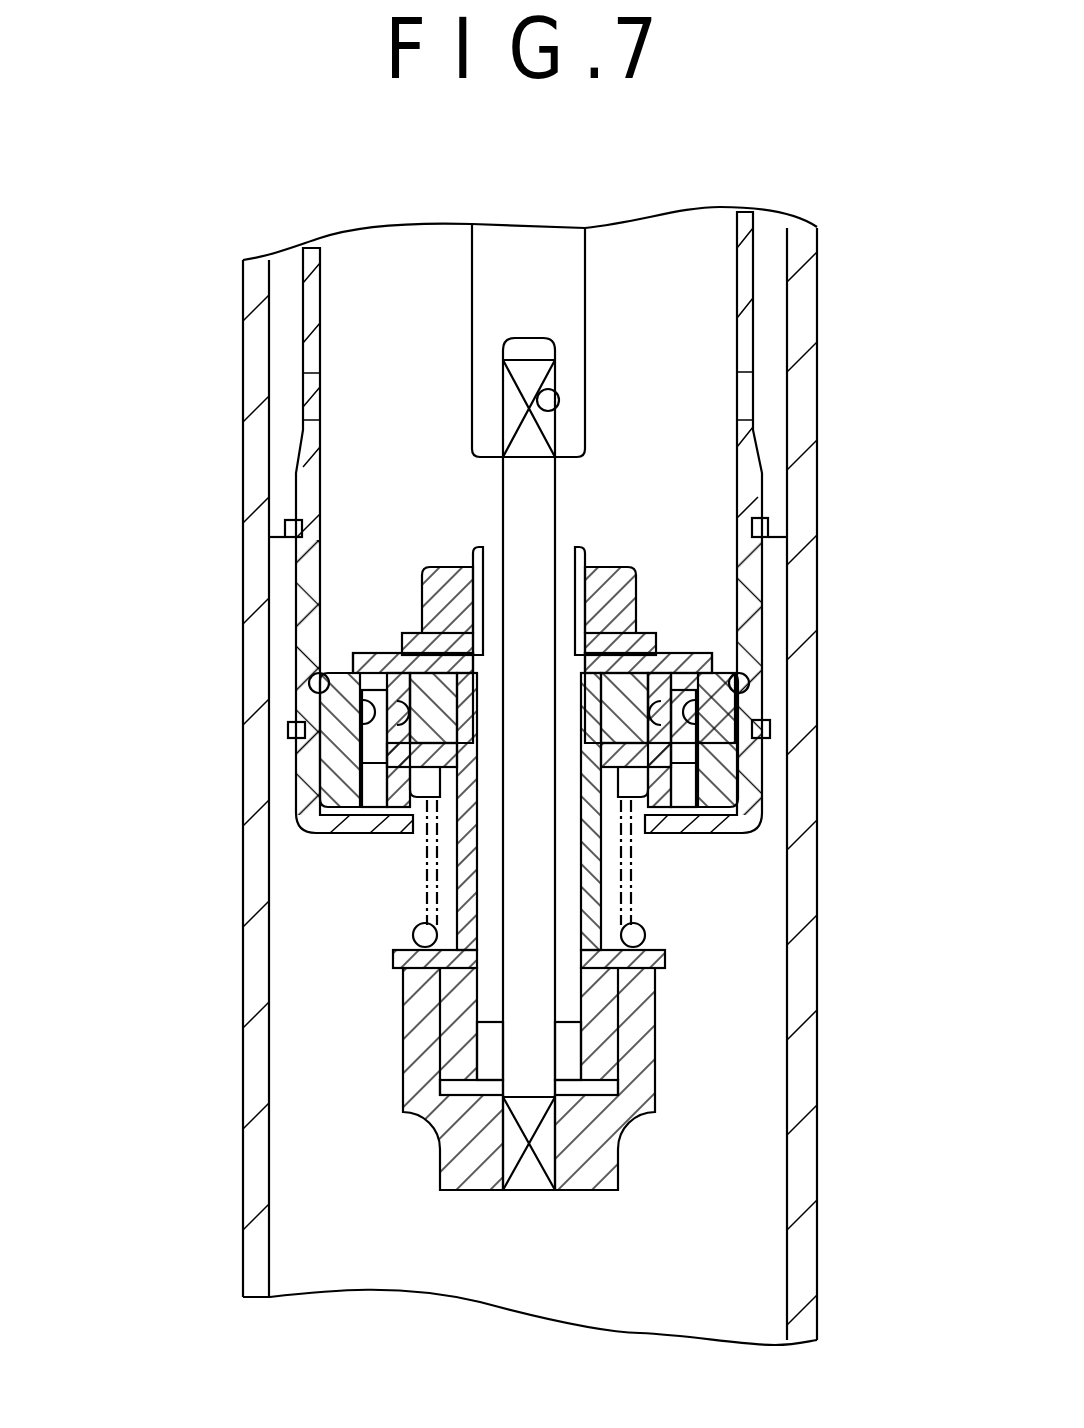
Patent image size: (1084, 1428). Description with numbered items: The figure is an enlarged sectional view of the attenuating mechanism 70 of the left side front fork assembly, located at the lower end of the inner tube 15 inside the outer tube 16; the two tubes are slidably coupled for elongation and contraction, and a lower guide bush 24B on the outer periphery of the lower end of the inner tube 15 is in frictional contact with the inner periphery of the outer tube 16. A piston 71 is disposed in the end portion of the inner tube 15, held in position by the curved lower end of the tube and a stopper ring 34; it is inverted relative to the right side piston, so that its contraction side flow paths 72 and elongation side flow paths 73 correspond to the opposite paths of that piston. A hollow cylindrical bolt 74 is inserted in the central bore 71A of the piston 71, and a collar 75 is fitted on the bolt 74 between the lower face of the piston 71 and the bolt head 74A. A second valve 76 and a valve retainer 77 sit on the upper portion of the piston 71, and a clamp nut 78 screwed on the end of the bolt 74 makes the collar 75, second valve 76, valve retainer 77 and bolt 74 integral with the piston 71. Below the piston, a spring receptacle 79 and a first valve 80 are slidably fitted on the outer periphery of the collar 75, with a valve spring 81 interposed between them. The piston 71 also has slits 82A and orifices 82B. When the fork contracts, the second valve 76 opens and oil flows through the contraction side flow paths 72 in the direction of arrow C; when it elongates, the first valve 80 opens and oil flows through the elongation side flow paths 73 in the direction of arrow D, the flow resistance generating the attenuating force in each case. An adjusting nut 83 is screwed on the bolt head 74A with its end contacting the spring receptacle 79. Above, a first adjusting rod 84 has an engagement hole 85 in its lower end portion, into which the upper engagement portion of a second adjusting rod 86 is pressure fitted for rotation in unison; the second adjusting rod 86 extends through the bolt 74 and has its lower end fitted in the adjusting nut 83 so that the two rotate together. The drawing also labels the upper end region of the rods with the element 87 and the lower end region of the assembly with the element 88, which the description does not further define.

The inner tube 15 is at (303, 328).
The outer tube 16 is at (805, 298).
The lower guide bush 24B is at (293, 648).
The stopper ring 34 is at (317, 680).
The attenuating mechanism 70 is at (700, 607).
The piston 71 is at (765, 780).
The central bore 71A is at (578, 692).
The contraction side flow paths 72 is at (360, 750).
The elongation side flow paths 73 is at (748, 672).
The hollow cylindrical bolt 74 is at (483, 548).
The bolt head 74A is at (460, 1067).
The collar 75 is at (430, 905).
The second valve 76 is at (353, 657).
The valve retainer 77 is at (700, 636).
The clamp nut 78 is at (640, 633).
The spring receptacle 79 is at (660, 966).
The first valve 80 is at (420, 817).
The valve spring 81 is at (668, 956).
The slits 82A is at (387, 747).
The orifices 82B is at (375, 737).
The adjusting nut 83 is at (622, 1150).
The first adjusting rod 84 is at (577, 288).
The engagement hole 85 is at (553, 413).
The second adjusting rod 86 is at (547, 1052).
The rod end 87 is at (505, 385).
The rod bottom end 88 is at (540, 1195).